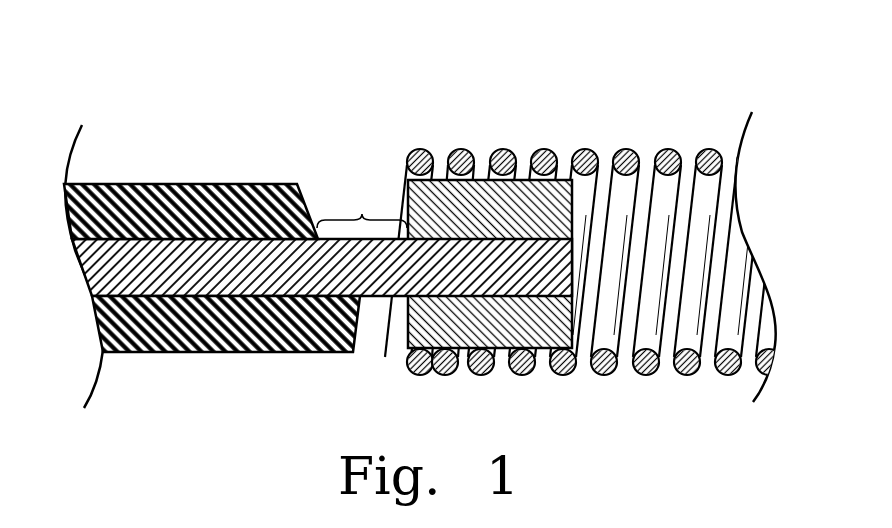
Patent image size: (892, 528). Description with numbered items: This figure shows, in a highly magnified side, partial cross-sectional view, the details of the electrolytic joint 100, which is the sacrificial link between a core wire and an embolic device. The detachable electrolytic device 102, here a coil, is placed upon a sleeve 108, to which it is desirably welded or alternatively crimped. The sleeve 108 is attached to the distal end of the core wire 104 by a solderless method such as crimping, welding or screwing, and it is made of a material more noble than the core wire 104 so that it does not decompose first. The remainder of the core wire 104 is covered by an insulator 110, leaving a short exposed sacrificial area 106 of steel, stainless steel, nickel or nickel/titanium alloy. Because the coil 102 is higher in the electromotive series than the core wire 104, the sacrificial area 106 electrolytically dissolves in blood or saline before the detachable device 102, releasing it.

The electrolytic joint 100 is at (570, 106).
The detachable electrolytic device 102 is at (643, 373).
The core wire 104 is at (372, 272).
The sacrificial area 106 is at (362, 213).
The sleeve 108 is at (422, 198).
The insulator 110 is at (183, 343).